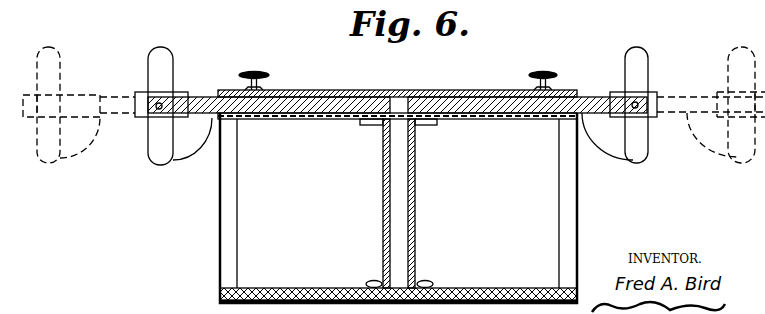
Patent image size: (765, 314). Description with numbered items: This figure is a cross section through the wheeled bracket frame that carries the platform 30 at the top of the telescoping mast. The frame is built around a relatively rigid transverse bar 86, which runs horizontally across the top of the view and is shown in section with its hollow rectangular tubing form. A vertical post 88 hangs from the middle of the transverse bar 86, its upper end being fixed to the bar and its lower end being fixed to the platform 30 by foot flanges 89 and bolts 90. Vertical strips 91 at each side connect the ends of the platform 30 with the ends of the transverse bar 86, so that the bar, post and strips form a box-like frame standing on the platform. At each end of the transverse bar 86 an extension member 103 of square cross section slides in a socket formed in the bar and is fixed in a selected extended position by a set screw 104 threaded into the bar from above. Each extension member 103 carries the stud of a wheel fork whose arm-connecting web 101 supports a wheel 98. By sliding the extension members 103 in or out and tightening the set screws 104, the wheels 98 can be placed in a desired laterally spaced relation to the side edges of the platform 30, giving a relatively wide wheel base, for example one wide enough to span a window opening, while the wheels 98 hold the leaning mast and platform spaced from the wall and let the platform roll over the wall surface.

The platform 30 is at (492, 285).
The transverse bar 86 is at (487, 81).
The vertical post 88 is at (413, 222).
The foot flanges 89 is at (434, 283).
The bolts 90 is at (372, 281).
The vertical strips 91 is at (228, 195).
The wheels 98 is at (642, 57).
The arm-connecting webs 101 is at (650, 112).
The extension members 103 is at (583, 96).
The set screws 104 is at (548, 64).